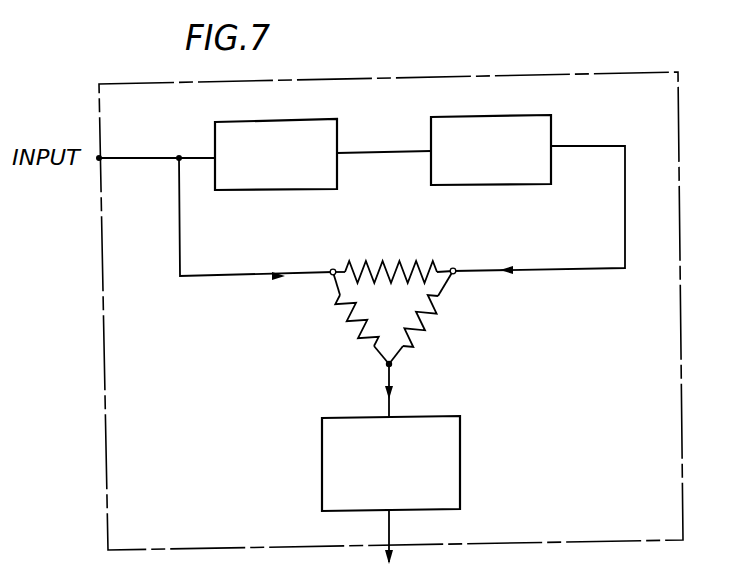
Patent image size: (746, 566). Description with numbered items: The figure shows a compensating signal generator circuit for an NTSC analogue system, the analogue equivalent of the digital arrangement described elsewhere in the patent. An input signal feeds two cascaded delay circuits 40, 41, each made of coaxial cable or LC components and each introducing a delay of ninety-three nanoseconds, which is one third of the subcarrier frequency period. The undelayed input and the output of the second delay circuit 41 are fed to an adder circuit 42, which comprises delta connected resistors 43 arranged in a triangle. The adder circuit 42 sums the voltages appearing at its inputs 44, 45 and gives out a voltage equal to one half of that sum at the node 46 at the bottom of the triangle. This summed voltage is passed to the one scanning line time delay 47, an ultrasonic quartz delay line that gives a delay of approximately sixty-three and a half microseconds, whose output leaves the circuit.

The delay circuit 40 is at (308, 121).
The delay circuit 41 is at (551, 117).
The adder circuit 42 is at (348, 336).
The delta connected resistors 43 is at (383, 262).
The input 44 is at (331, 270).
The input 45 is at (455, 268).
The node 46 is at (392, 365).
The one scanning line time delay 47 is at (462, 455).